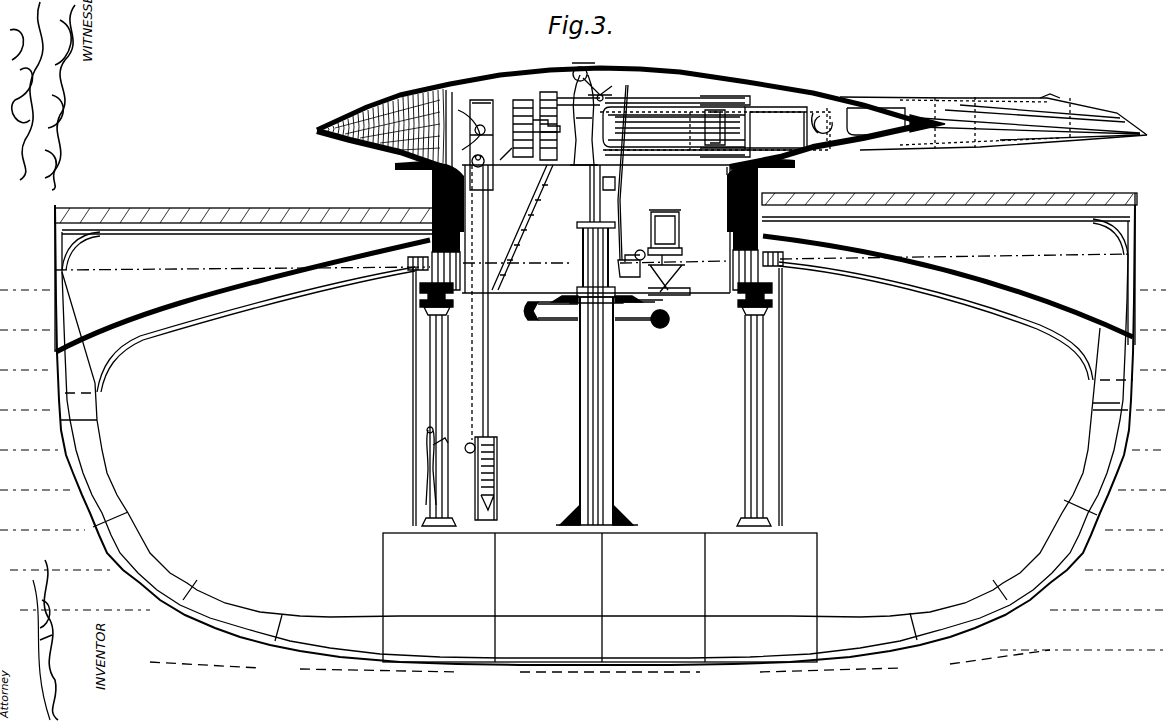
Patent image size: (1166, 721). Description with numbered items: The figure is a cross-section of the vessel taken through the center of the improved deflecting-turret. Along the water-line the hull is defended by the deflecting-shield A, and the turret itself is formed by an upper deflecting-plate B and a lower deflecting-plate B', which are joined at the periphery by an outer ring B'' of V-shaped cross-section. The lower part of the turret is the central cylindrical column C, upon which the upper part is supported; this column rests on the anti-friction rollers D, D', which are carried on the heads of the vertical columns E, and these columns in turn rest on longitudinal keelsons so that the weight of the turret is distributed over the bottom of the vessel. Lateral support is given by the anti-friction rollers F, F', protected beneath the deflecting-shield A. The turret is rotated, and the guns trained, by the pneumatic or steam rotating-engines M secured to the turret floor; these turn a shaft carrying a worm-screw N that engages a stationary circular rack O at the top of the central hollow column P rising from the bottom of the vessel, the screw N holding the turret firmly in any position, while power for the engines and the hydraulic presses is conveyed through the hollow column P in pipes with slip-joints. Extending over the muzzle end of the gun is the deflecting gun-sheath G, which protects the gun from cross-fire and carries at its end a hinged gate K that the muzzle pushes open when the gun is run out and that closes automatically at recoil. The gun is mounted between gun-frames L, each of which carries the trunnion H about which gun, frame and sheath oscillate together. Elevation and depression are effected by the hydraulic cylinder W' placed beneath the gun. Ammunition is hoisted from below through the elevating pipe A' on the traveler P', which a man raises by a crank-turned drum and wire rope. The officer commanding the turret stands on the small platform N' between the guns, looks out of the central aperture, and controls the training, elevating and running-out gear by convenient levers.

The deflecting-shield A is at (596, 272).
The elevating pipe A' is at (486, 342).
The upper deflecting-plate B is at (615, 126).
The lower deflecting-plate B' is at (820, 154).
The outer ring B'' is at (292, 136).
The central cylindrical column C is at (592, 224).
The anti-friction roller D is at (415, 299).
The anti-friction roller D' is at (741, 299).
The vertical column E is at (597, 397).
The anti-friction roller F is at (409, 264).
The anti-friction roller F' is at (779, 256).
The deflecting gun-sheath G is at (993, 115).
The trunnion H is at (858, 129).
The hinged gate K is at (1121, 103).
The gun-frame L is at (776, 128).
The rotating-engine M is at (654, 190).
The worm-screw N is at (642, 318).
The platform N' is at (505, 156).
The circular rack O is at (547, 318).
The central hollow column P is at (600, 413).
The traveler P' is at (484, 512).
The hydraulic cylinder W' is at (595, 286).